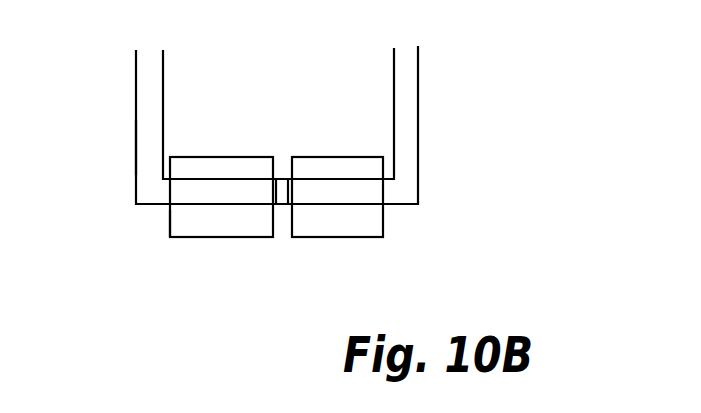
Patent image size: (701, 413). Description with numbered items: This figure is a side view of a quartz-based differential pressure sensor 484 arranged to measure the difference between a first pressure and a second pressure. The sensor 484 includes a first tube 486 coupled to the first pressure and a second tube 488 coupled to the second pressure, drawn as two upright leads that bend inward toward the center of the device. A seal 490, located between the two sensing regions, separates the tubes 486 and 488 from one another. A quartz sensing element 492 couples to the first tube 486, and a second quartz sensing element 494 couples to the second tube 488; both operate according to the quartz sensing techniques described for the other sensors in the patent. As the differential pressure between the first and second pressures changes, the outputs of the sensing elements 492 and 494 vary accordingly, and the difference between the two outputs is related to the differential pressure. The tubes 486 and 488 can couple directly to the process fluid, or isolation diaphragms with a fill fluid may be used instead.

The differential pressure sensor 484 is at (158, 232).
The first tube 486 is at (136, 147).
The second tube 488 is at (419, 78).
The seal 490 is at (292, 203).
The quartz sensing element 492 is at (238, 225).
The quartz sensing element 494 is at (320, 220).